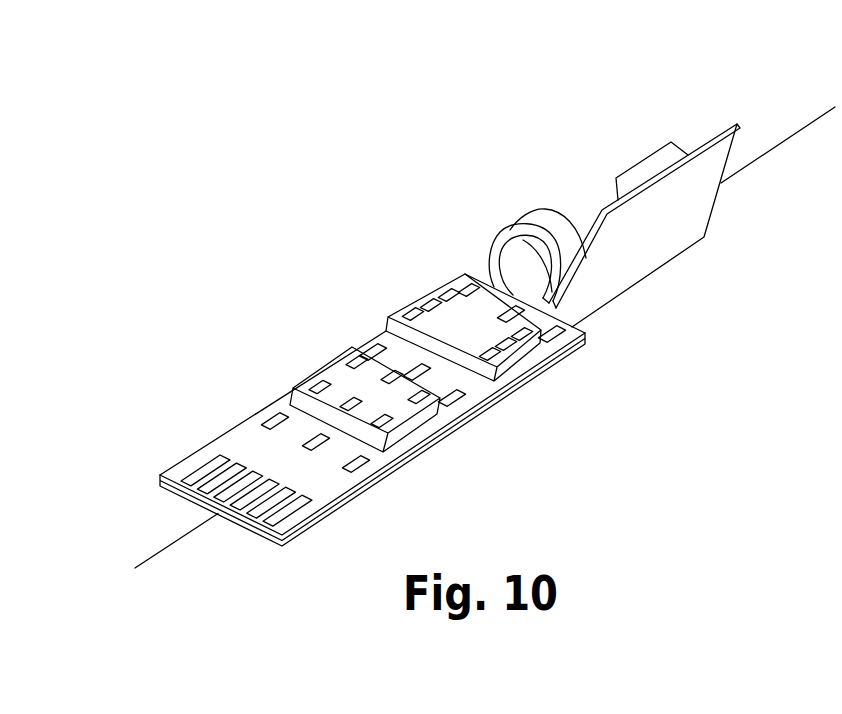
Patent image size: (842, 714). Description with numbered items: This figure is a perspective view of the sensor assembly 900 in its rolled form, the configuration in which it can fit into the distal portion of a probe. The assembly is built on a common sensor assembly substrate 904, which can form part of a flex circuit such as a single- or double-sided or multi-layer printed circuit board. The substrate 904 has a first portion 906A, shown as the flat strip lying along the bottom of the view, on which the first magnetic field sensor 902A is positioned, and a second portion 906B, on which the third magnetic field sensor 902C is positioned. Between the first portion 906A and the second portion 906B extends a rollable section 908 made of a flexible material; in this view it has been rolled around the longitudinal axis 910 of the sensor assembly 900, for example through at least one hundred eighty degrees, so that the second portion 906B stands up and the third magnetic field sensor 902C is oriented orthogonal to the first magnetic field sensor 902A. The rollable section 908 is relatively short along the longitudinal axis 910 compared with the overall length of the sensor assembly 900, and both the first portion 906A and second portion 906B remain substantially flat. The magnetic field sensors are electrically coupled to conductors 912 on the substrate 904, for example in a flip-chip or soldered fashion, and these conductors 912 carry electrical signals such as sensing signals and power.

The sensor assembly 900 is at (276, 158).
The first magnetic field sensor 902A is at (335, 367).
The third magnetic field sensor 902C is at (652, 163).
The sensor assembly substrate 904 is at (574, 337).
The first portion 906A is at (421, 443).
The second portion 906B is at (731, 125).
The rollable section 908 is at (546, 215).
The longitudinal axis 910 is at (813, 124).
The conductors 912 is at (274, 418).